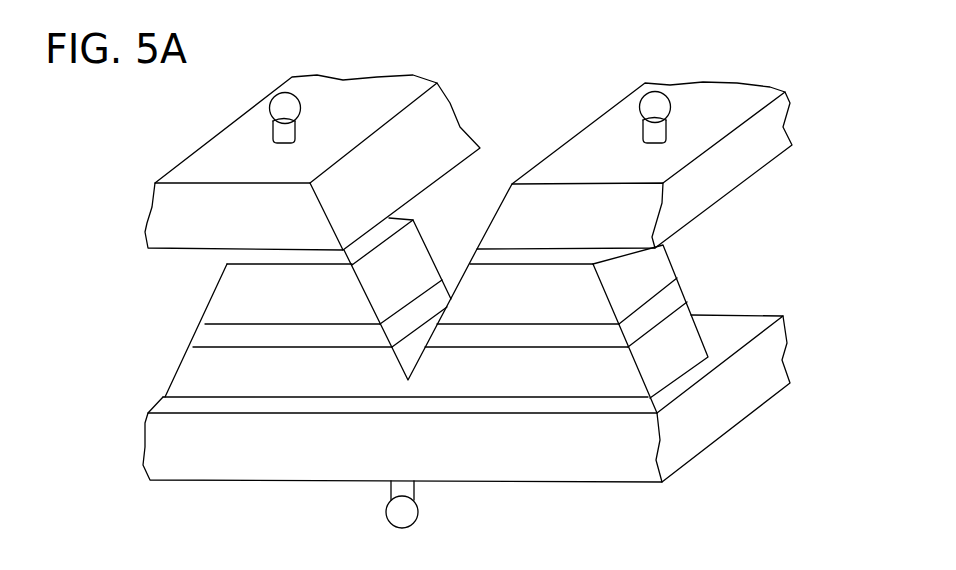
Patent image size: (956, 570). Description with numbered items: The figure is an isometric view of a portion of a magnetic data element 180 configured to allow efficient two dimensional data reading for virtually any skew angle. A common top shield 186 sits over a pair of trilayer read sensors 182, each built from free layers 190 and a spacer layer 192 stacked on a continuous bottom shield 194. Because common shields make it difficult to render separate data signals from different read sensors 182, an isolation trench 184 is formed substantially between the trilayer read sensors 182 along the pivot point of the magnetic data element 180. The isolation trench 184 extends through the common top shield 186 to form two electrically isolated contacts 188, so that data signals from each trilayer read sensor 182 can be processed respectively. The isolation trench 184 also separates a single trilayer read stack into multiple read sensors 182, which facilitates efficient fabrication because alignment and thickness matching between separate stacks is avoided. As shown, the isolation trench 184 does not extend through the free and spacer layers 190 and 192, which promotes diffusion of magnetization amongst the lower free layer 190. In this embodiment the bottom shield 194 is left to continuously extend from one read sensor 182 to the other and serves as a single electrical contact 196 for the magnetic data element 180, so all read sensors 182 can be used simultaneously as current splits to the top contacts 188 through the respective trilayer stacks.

The magnetic data element 180 is at (724, 472).
The trilayer read sensor 182 is at (134, 292).
The isolation trench 184 is at (491, 156).
The common top shield 186 is at (183, 162).
The electrically isolated contact 188 is at (273, 133).
The free layer 190 is at (213, 295).
The spacer layer 192 is at (197, 331).
The bottom shield 194 is at (466, 398).
The single electrical contact 196 is at (391, 495).